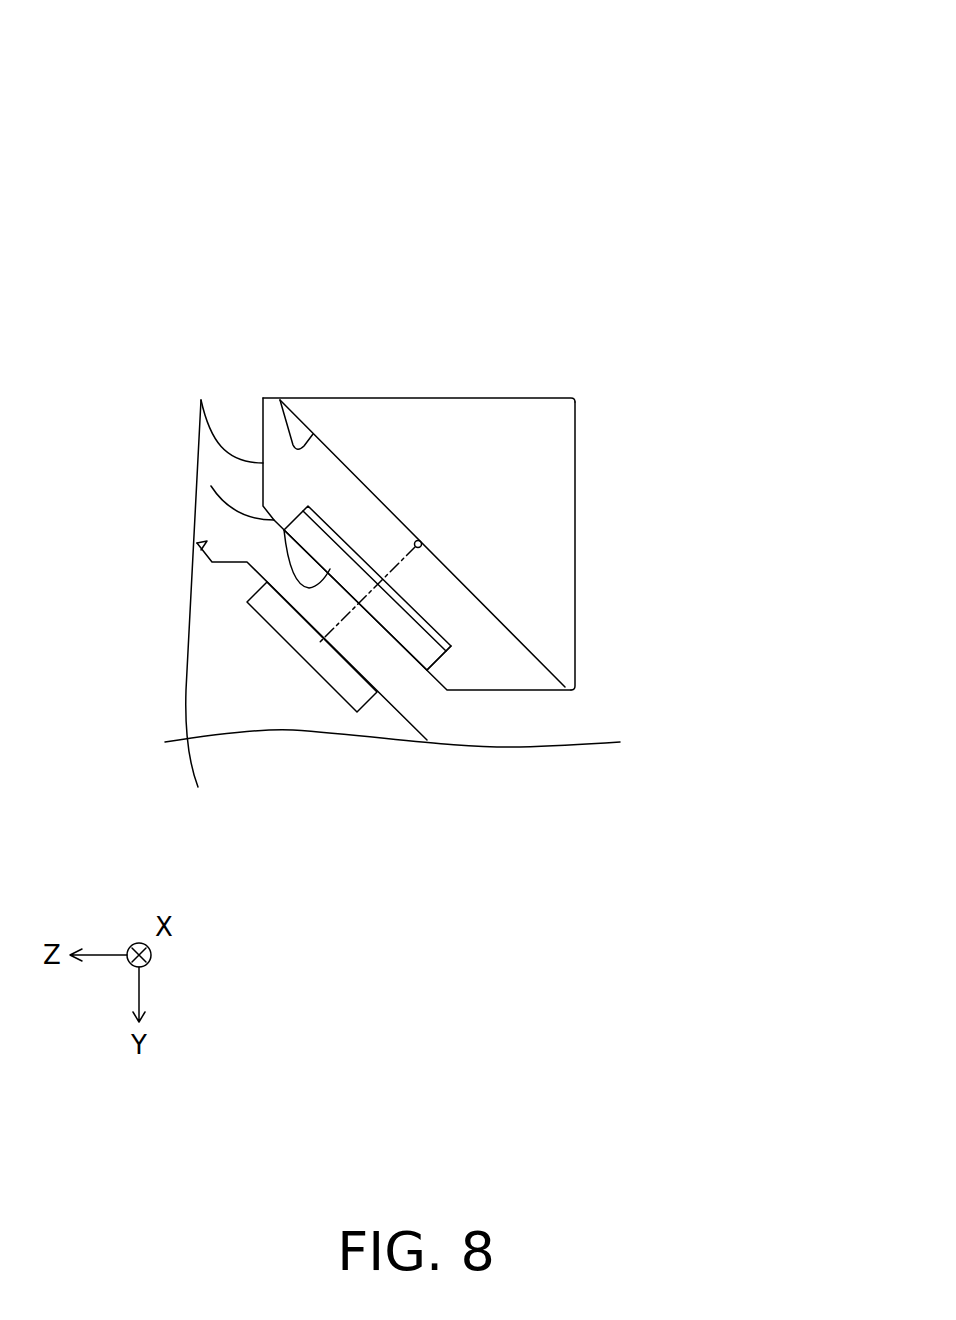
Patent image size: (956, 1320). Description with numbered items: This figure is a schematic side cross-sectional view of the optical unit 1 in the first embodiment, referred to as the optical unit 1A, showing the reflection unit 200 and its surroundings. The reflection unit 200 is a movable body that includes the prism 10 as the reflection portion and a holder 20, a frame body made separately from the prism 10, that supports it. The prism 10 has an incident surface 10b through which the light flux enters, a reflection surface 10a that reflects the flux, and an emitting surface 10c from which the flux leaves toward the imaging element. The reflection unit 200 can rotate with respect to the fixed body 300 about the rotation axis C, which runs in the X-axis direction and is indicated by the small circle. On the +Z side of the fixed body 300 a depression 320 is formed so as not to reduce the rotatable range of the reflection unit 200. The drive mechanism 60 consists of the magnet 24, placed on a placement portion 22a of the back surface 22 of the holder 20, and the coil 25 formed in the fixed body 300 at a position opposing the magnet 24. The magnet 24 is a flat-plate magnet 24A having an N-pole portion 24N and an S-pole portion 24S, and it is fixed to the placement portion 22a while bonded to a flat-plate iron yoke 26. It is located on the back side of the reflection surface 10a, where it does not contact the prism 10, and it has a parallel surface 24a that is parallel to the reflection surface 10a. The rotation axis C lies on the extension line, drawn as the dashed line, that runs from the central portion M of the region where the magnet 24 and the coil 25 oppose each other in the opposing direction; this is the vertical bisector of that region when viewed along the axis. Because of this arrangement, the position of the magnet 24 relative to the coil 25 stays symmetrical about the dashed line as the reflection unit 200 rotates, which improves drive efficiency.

The optical unit 1 is at (628, 86).
The optical unit 1A is at (570, 144).
The reflection unit 200 is at (590, 308).
The prism 10 is at (548, 397).
The reflection surface 10a is at (280, 400).
The incident surface 10b is at (373, 397).
The emitting surface 10c is at (576, 431).
The holder 20 is at (201, 400).
The back surface 22 is at (211, 486).
The placement portion 22a is at (333, 531).
The magnet 24 is at (462, 528).
The flat-plate magnet 24A is at (427, 670).
The S-pole portion 24S is at (352, 540).
The N-pole portion 24N is at (390, 618).
The parallel surface 24a is at (451, 646).
The iron yoke 26 is at (368, 563).
The rotation axis C is at (421, 541).
The depression 320 is at (197, 543).
The central portion M is at (318, 645).
The coil 25 is at (335, 690).
The fixed body 300 is at (232, 702).
The drive mechanism 60 is at (421, 708).